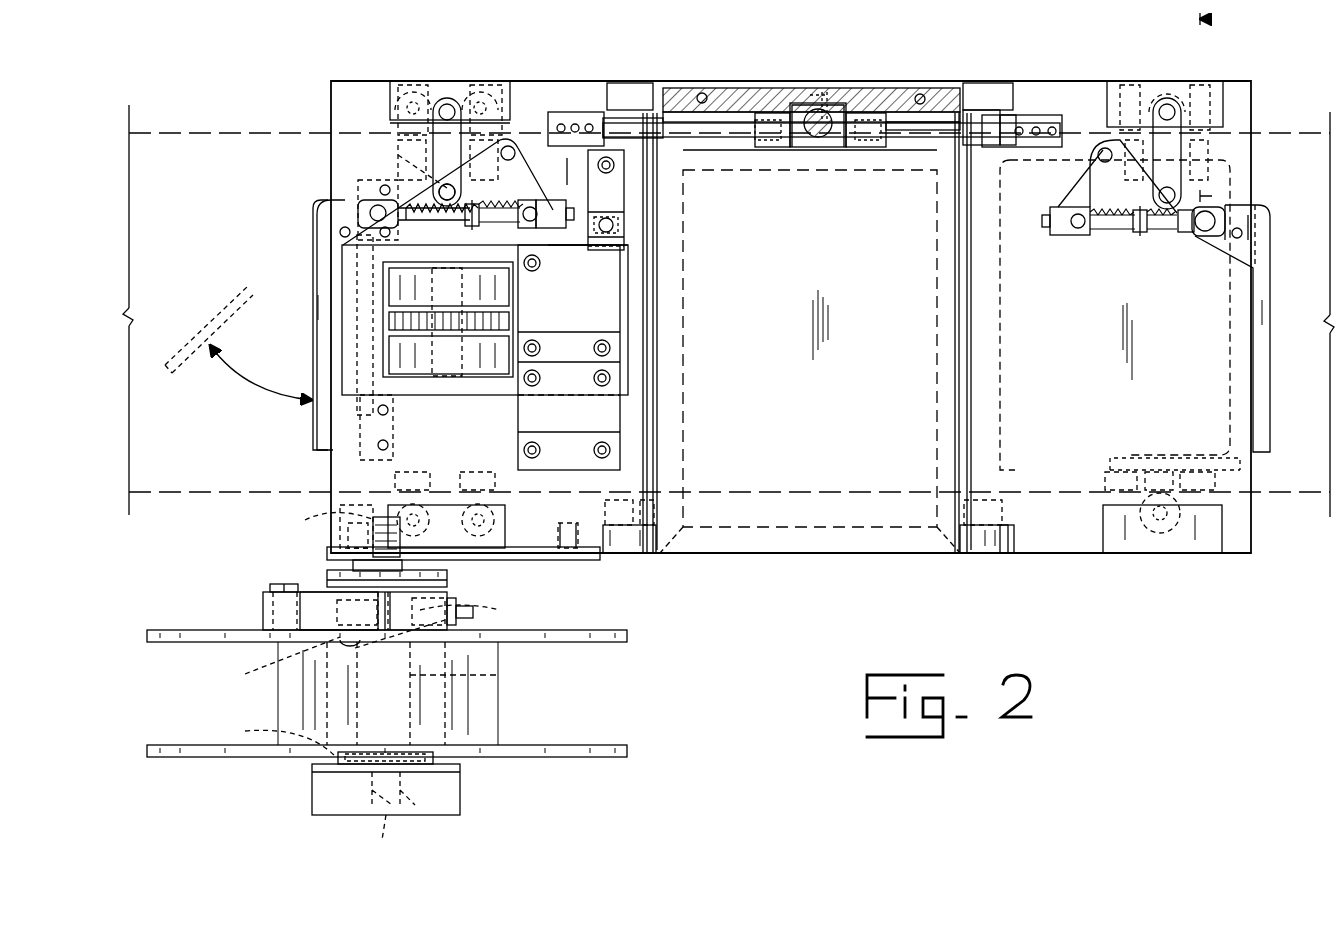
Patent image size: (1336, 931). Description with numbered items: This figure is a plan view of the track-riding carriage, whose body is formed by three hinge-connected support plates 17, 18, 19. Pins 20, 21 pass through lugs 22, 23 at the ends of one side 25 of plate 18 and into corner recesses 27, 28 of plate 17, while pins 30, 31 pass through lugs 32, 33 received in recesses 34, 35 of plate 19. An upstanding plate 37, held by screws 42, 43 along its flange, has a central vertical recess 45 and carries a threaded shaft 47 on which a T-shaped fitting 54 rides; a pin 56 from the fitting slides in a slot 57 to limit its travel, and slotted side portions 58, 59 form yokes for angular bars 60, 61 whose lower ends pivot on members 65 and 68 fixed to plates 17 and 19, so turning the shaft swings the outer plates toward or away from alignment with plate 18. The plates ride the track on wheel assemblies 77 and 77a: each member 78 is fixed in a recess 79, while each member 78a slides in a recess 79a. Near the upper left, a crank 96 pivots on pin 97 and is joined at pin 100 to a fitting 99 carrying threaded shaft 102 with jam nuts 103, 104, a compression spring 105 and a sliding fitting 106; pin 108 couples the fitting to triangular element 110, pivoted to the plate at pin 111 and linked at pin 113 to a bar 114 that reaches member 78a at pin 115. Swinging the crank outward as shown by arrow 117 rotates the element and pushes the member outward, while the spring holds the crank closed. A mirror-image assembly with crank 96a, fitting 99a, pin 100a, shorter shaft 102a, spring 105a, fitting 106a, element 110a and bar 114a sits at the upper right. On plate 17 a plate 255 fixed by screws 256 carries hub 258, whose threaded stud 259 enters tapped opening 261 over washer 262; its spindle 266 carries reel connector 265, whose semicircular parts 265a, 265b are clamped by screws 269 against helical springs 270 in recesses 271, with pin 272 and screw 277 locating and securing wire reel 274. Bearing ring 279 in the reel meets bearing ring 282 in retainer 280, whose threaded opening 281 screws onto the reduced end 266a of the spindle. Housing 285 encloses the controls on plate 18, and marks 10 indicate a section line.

The section line 10 is at (1217, 105).
The support plate 17 is at (347, 552).
The support plate 18 is at (812, 91).
The support plate 19 is at (1074, 553).
The pin 20 is at (605, 511).
The pin 21 is at (602, 110).
The lug 22 is at (616, 554).
The lug 23 is at (630, 82).
The side of plate 18 25 is at (661, 337).
The corner recess 27 is at (650, 528).
The corner recess 28 is at (640, 118).
The pin 30 is at (1003, 512).
The pin 31 is at (1017, 116).
The lug 32 is at (972, 555).
The lug 33 is at (998, 84).
The recess 34 is at (1007, 555).
The recess 35 is at (985, 110).
The upstanding plate 37 is at (770, 88).
The screw 42 is at (705, 94).
The screw 43 is at (919, 94).
The vertical recess 45 is at (845, 112).
The threaded shaft 47 is at (826, 110).
The fitting 54 is at (822, 148).
The pin 56 is at (824, 92).
The slot 57 is at (829, 92).
The side portion of fitting 58 is at (760, 148).
The side portion of fitting 59 is at (874, 148).
The angular bar 60 is at (722, 118).
The angular bar 61 is at (940, 118).
The member 65 is at (565, 110).
The member 68 is at (1048, 115).
The wheel assembly 77 is at (1165, 558).
The wheel assembly 77a is at (492, 80).
The member 78 is at (455, 542).
The member 78a is at (466, 83).
The recess 79 is at (506, 510).
The recess 79a is at (437, 92).
The crank 96 is at (228, 323).
The crank 96a is at (1270, 290).
The pivot pin 97 is at (340, 231).
The fitting 99 is at (380, 185).
The fitting 99a is at (1186, 232).
The pin 100 is at (372, 205).
The pin 100a is at (1212, 210).
The threaded shaft 102 is at (420, 222).
The threaded shaft 102a is at (1130, 232).
The nut 103 is at (468, 226).
The nut 104 is at (498, 224).
The compression spring 105 is at (520, 205).
The compression spring 105a is at (1135, 234).
The fitting 106 is at (560, 203).
The fitting 106a is at (1065, 236).
The pin 108 is at (545, 230).
The triangular element 110 is at (522, 150).
The triangular element 110a is at (1092, 182).
The pin 111 is at (505, 140).
The pin 113 is at (438, 192).
The bar 114 is at (435, 176).
The bar 114a is at (1182, 173).
The pin 115 is at (447, 104).
The arrow 117 is at (250, 382).
The plate 255 is at (524, 554).
The screw 256 is at (340, 540).
The hub 258 is at (327, 572).
The threaded stud 259 is at (378, 520).
The tapped opening 261 is at (330, 505).
The washer 262 is at (424, 565).
The reel connector 265 is at (263, 618).
The semicircular connector part 265a is at (310, 592).
The semicircular connector part 265b is at (400, 650).
The spindle 266 is at (500, 680).
The reduced threaded end of spindle 266a is at (406, 803).
The screw 269 is at (460, 606).
The helical compression spring 270 is at (395, 640).
The cylindrical recess 271 is at (496, 596).
The pin 272 is at (276, 658).
The wire reel 274 is at (578, 757).
The screw 277 is at (270, 590).
The bearing ring 279 is at (271, 735).
The retainer 280 is at (462, 798).
The threaded opening 281 is at (398, 838).
The bearing ring 282 is at (340, 758).
The housing 285 is at (812, 424).